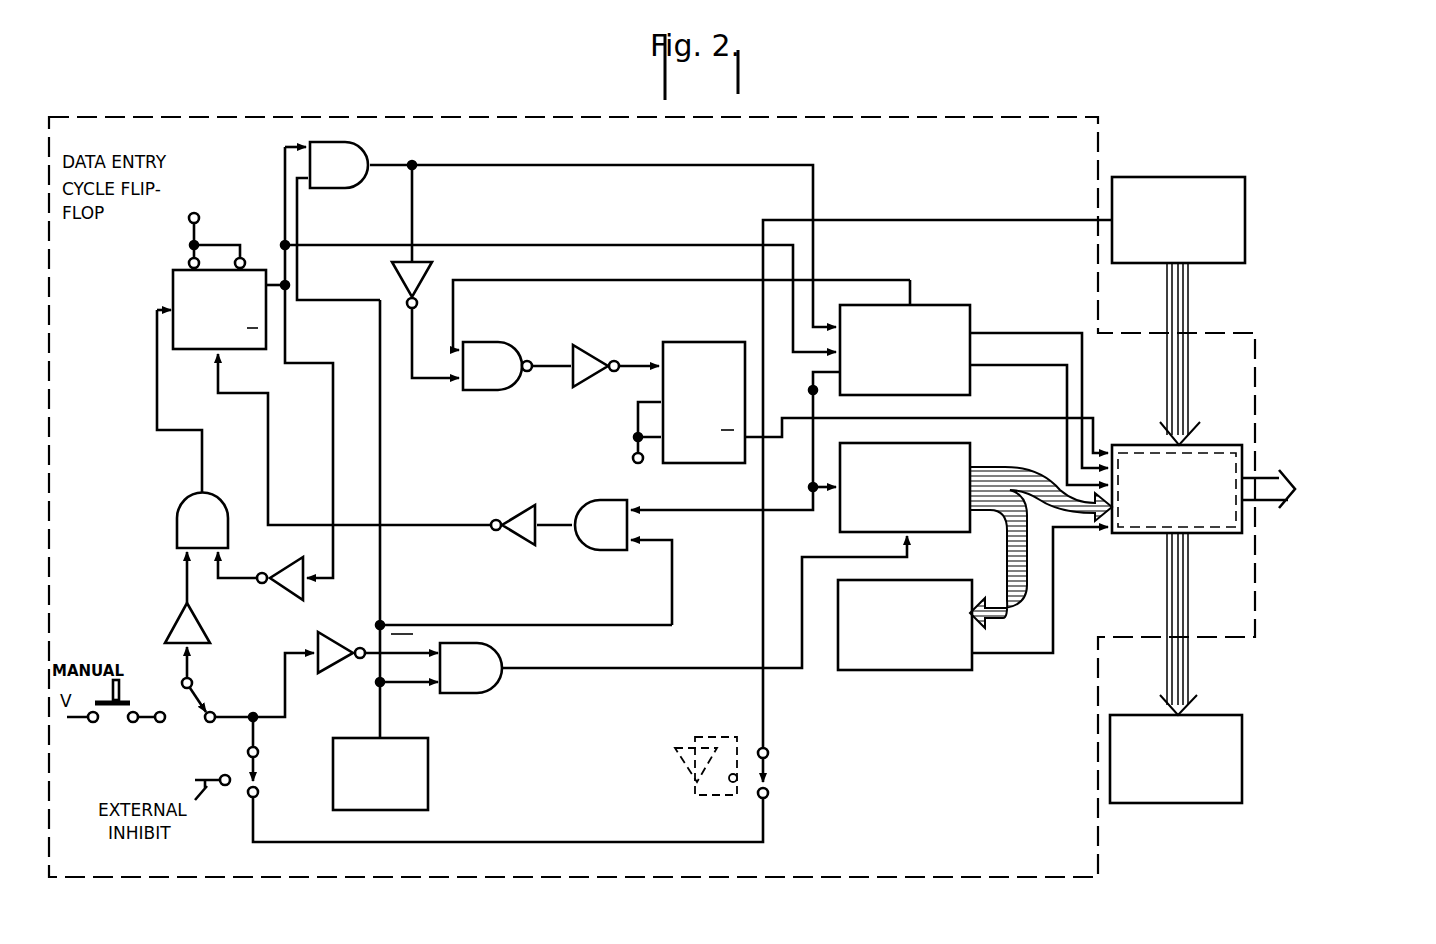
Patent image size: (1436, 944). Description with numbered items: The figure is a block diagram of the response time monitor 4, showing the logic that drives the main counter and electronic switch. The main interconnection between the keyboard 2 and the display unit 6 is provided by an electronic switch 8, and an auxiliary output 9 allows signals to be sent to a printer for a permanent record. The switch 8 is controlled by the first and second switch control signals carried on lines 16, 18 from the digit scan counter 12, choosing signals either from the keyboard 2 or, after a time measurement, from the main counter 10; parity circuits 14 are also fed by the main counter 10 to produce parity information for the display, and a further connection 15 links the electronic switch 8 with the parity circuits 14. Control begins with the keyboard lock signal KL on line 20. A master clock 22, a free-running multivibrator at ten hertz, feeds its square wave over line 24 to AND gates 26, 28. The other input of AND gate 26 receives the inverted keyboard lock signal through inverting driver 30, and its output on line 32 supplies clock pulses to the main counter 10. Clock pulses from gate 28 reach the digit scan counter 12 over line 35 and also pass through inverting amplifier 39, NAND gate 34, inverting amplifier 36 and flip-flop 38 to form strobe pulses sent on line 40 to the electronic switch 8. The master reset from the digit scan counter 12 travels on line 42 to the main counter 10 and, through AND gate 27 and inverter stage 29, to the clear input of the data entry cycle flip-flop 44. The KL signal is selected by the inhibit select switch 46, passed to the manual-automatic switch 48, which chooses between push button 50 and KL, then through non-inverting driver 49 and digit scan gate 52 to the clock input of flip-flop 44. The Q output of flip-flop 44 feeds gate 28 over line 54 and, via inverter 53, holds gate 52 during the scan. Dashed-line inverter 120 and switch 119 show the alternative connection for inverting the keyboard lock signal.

The keyboard 2 is at (1245, 233).
The response time monitor 4 is at (1018, 84).
The display unit 6 is at (1242, 718).
The electronic switch 8 is at (1225, 535).
The auxiliary output 9 is at (1290, 477).
The main counter 10 is at (970, 447).
The digit scan counter 12 is at (968, 305).
The parity circuits 14 is at (955, 672).
The line from electronic switches to parity circuits 15 is at (1032, 655).
The line 16 is at (1062, 335).
The line 18 is at (1045, 368).
The line 20 is at (1049, 219).
The master clock 22 is at (428, 773).
The line 24 is at (382, 440).
The AND gate 26 is at (470, 695).
The AND gate 27 is at (597, 493).
The AND gate 28 is at (340, 190).
The inverter stage 29 is at (523, 506).
The inverting driver 30 is at (331, 677).
The line 32 is at (742, 667).
The NAND gate 34 is at (489, 392).
The connecting line 35 is at (638, 175).
The inverting amplifier 36 is at (595, 351).
The flip-flop 38 is at (705, 465).
The inverting amplifier 39 is at (392, 267).
The line 40 is at (782, 442).
The connecting line 42 is at (781, 512).
The data entry cycle flip-flop 44 is at (173, 284).
The inhibit select switch 46 is at (240, 765).
The manual-automatic switch 48 is at (212, 694).
The non-inverting driver 49 is at (178, 623).
The push button 50 is at (122, 670).
The digit scan gate 52 is at (175, 512).
The inverter 53 is at (281, 596).
The line 54 is at (285, 221).
The switch 119 is at (768, 762).
The inverter 120 is at (675, 760).